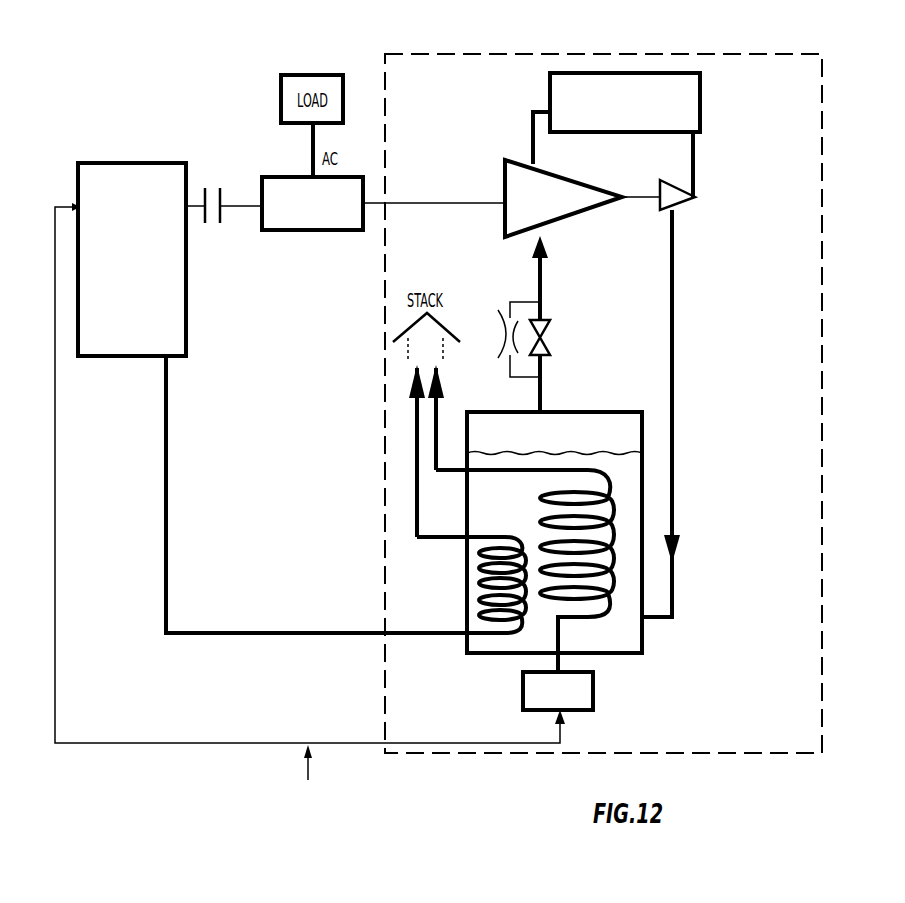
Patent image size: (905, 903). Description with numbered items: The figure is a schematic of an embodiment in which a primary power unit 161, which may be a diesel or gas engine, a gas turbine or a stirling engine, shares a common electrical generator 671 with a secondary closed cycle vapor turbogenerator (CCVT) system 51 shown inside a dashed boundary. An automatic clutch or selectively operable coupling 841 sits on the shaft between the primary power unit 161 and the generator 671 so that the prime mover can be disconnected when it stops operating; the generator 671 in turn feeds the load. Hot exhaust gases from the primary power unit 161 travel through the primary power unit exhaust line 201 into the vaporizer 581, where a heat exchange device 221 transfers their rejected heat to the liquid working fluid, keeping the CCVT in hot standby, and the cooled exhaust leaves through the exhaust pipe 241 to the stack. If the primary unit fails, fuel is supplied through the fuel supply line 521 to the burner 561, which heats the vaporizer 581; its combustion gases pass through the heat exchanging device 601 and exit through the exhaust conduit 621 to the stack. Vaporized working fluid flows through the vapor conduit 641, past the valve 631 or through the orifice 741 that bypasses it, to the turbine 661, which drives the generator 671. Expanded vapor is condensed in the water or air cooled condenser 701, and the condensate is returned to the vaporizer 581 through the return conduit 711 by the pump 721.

The secondary closed cycle vapor turbogenerator (CCVT) system 51 is at (385, 30).
The primary power unit 161 is at (98, 163).
The automatic clutch or selectively operable coupling 841 is at (220, 219).
The common electrical generator 671 is at (318, 231).
The turbine 661 is at (505, 158).
The condenser 701 is at (642, 133).
The pump 721 is at (697, 195).
The return conduit 711 is at (673, 273).
The vapor conduit 641 is at (543, 262).
The valve 631 is at (547, 317).
The orifice 741 is at (505, 333).
The exhaust conduit 621 is at (440, 417).
The vaporizer 581 is at (613, 410).
The heat exchanging device 601 is at (577, 465).
The heat exchange device 221 is at (495, 535).
The exhaust pipe 241 is at (413, 538).
The primary power unit exhaust line 201 is at (220, 642).
The burner 561 is at (598, 672).
The fuel supply line 521 is at (342, 742).